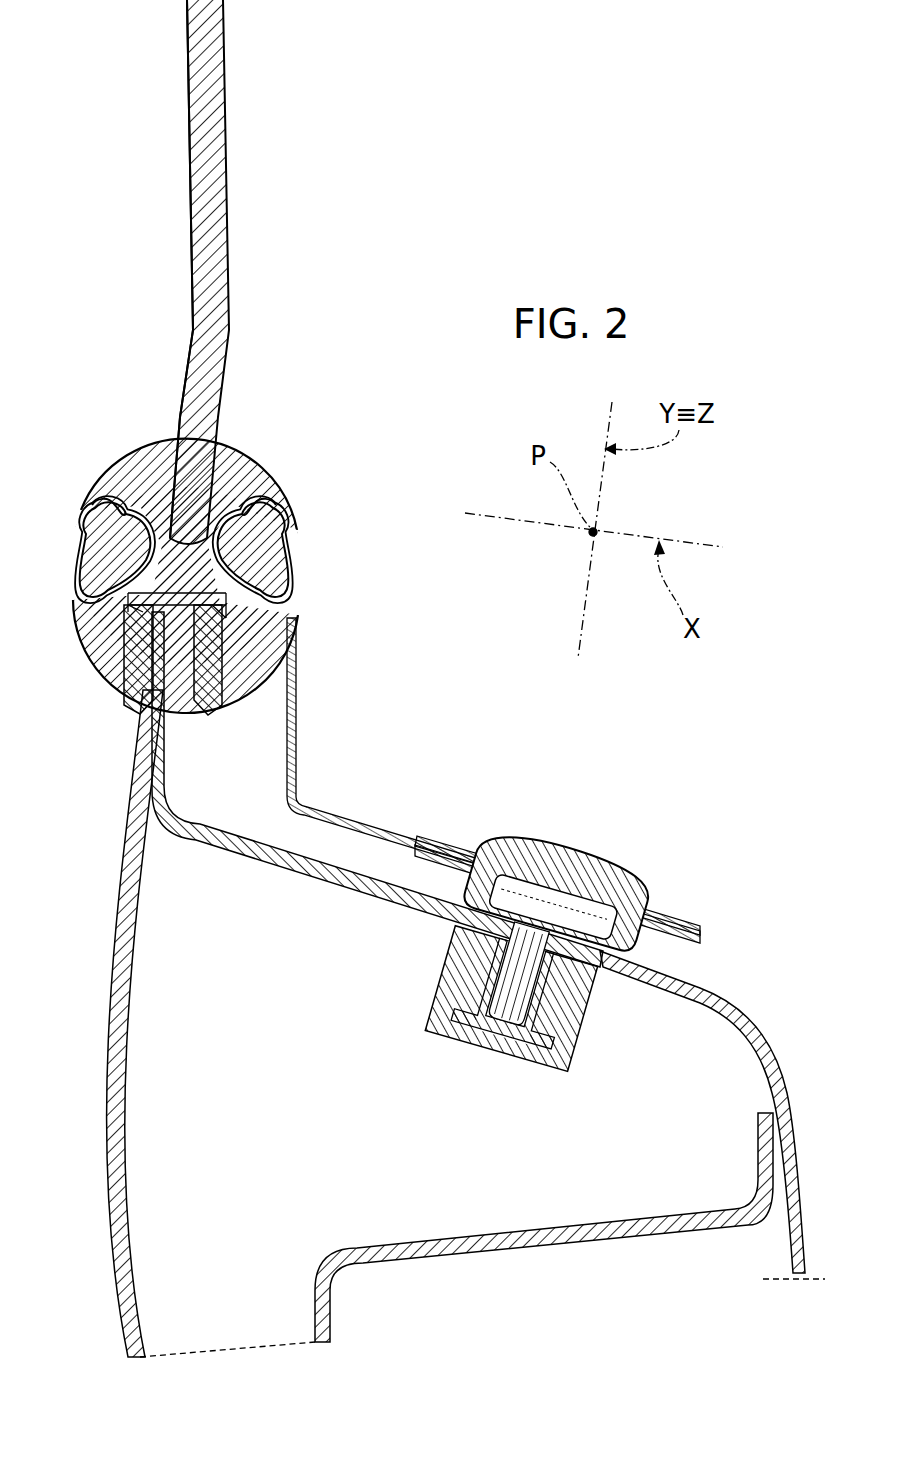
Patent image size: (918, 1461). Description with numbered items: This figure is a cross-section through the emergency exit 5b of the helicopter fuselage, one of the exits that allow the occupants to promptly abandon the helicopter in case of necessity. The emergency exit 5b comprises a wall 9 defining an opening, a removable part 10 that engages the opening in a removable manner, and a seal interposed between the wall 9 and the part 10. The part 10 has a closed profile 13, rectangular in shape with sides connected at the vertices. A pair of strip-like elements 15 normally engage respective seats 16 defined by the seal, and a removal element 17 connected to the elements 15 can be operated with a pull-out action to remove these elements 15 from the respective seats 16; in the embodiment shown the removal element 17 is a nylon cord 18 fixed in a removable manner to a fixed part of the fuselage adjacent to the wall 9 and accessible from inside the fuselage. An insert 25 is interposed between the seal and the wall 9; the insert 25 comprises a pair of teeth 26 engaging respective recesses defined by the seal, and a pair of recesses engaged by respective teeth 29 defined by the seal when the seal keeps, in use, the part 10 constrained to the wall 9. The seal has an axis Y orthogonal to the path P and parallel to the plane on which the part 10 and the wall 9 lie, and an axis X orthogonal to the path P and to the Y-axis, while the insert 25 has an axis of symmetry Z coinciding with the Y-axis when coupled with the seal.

The emergency exit 5b is at (257, 187).
The wall 9 is at (116, 838).
The removable part 10 is at (213, 282).
The closed profile 13 is at (190, 245).
The strip-like element 15 is at (80, 566).
The seat 16 is at (80, 533).
The removal element 17 is at (472, 800).
The nylon cord 18 is at (565, 858).
The insert 25 is at (197, 730).
The tooth 26 is at (133, 604).
The tooth 29 is at (117, 692).